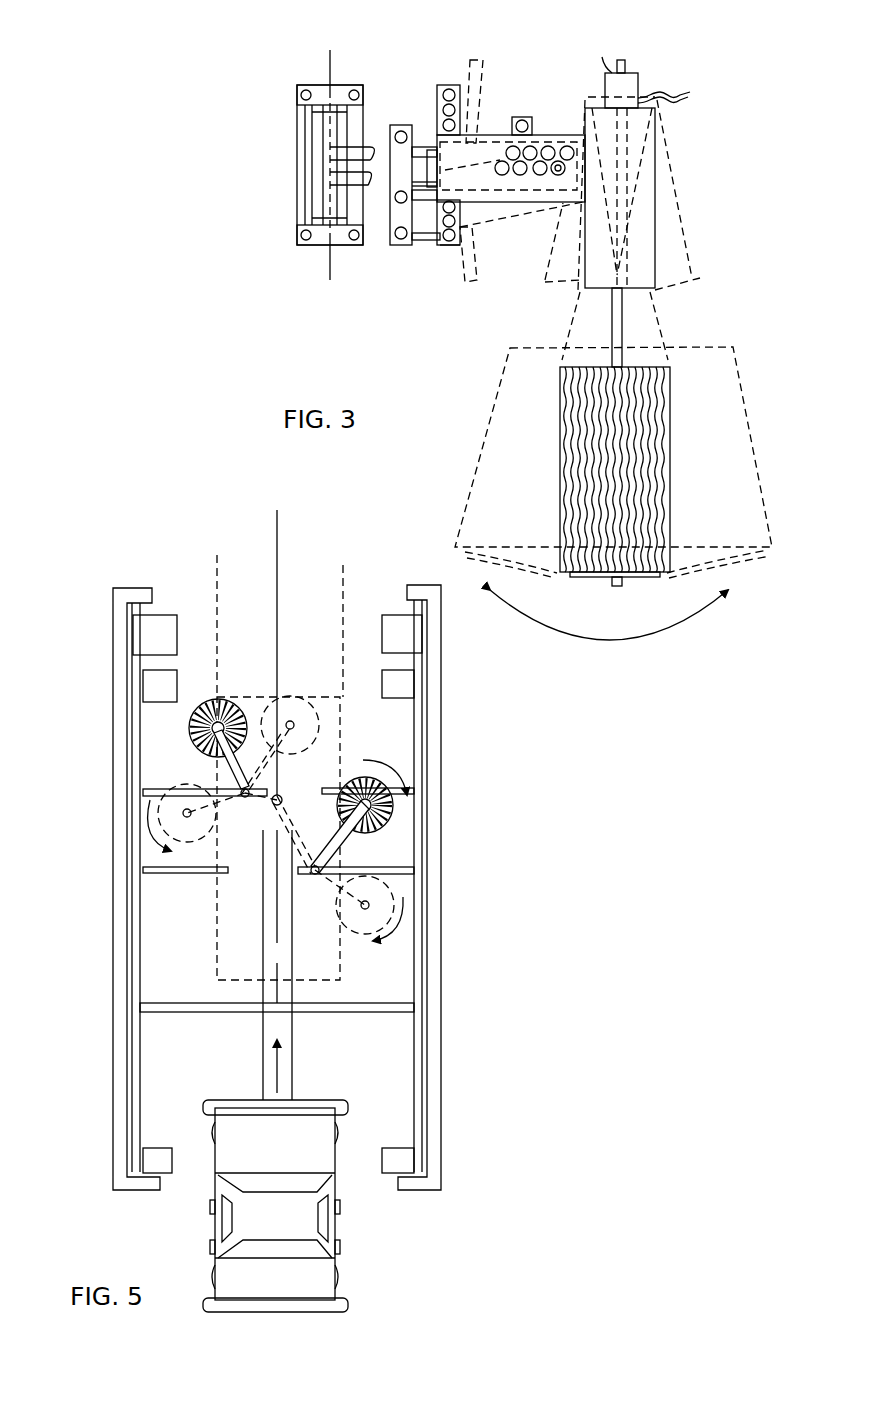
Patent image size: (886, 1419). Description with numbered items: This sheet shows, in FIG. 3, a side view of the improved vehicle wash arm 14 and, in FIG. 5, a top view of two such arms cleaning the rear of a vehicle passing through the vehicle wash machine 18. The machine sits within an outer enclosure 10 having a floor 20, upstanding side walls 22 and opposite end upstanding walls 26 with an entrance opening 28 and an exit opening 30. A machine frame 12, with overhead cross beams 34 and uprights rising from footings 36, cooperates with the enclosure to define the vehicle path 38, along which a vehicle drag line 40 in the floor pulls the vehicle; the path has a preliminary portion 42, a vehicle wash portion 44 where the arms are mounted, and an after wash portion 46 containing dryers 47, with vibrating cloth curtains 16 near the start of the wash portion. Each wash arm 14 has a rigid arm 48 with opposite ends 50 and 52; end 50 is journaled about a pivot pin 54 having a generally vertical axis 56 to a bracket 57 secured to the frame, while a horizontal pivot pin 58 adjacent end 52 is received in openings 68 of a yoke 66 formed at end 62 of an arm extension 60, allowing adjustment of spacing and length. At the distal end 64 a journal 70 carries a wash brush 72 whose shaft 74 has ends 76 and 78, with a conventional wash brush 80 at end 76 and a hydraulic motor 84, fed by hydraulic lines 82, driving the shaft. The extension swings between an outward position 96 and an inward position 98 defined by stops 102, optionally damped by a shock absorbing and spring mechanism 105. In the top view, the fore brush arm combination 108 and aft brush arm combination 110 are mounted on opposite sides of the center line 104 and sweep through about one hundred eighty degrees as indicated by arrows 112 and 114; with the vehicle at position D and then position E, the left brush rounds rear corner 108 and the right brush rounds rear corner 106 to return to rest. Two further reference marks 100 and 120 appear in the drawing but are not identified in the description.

In FIG. 5, the outer enclosure 10 is at (490, 755).
In FIG. 5, the machine frame 12 is at (428, 895).
In FIG. 3, the vehicle wash arm 14 is at (685, 134).
In FIG. 5, the vibrating cloth curtains 16 is at (157, 1003).
In FIG. 5, the vehicle wash machine 18 is at (447, 838).
In FIG. 5, the floor 20 is at (163, 955).
In FIG. 5, the upstanding side walls 22 is at (443, 728).
In FIG. 5, the opposite end upstanding walls 26 is at (120, 590).
In FIG. 5, the entrance opening 28 is at (357, 1188).
In FIG. 5, the exit opening 30 is at (163, 603).
In FIG. 5, the overhead cross beams 34 is at (150, 788).
In FIG. 5, the footings 36 is at (160, 692).
In FIG. 5, the vehicle path 38 is at (378, 1080).
In FIG. 5, the vehicle drag line 40 is at (310, 1003).
In FIG. 5, the preliminary portion 42 is at (380, 997).
In FIG. 5, the vehicle wash portion 44 is at (158, 877).
In FIG. 5, the after wash portion 46 is at (200, 605).
In FIG. 5, the dryers 47 is at (155, 633).
In FIG. 3, the rigid arm 48 is at (389, 190).
In FIG. 3, the end 50 is at (338, 157).
In FIG. 3, the end 52 is at (578, 130).
In FIG. 3, the pivot pin 54 is at (318, 118).
In FIG. 5, the pivot pin 54 is at (246, 800).
In FIG. 3, the vertical axis 56 is at (330, 78).
In FIG. 3, the bracket 57 is at (300, 138).
In FIG. 3, the pivot pin 58 is at (568, 150).
In FIG. 3, the arm extension 60 is at (463, 140).
In FIG. 3, the end 62 is at (424, 202).
In FIG. 3, the distal end 64 is at (600, 185).
In FIG. 3, the yoke 66 is at (470, 95).
In FIG. 3, the openings 68 is at (540, 175).
In FIG. 3, the journal 70 is at (655, 240).
In FIG. 3, the wash brush 72 is at (757, 370).
In FIG. 3, the shaft 74 is at (623, 342).
In FIG. 3, the end 76 is at (617, 586).
In FIG. 3, the end 78 is at (623, 58).
In FIG. 3, the wash brush 80 is at (563, 500).
In FIG. 3, the hydraulic lines 82 is at (690, 108).
In FIG. 3, the hydraulic motor 84 is at (437, 125).
In FIG. 3, the outward position 96 is at (768, 502).
In FIG. 3, the inward position 98 is at (490, 417).
In FIG. 3, the arc of swing 100 is at (587, 630).
In FIG. 3, the stops 102 is at (480, 268).
In FIG. 5, the axis 104 is at (277, 565).
In FIG. 3, the shock absorbing and spring mechanism 105 is at (433, 250).
In FIG. 5, the rear corner 106 is at (341, 688).
In FIG. 5, the fore brush arm combination 108 is at (218, 700).
In FIG. 5, the aft brush arm combination 110 is at (358, 825).
In FIG. 5, the arrow 112 is at (145, 812).
In FIG. 5, the arrow 114 is at (254, 668).
In FIG. 5, the brush arm 120 is at (210, 765).
In FIG. 5, the position D is at (282, 838).
In FIG. 5, the position E is at (345, 593).